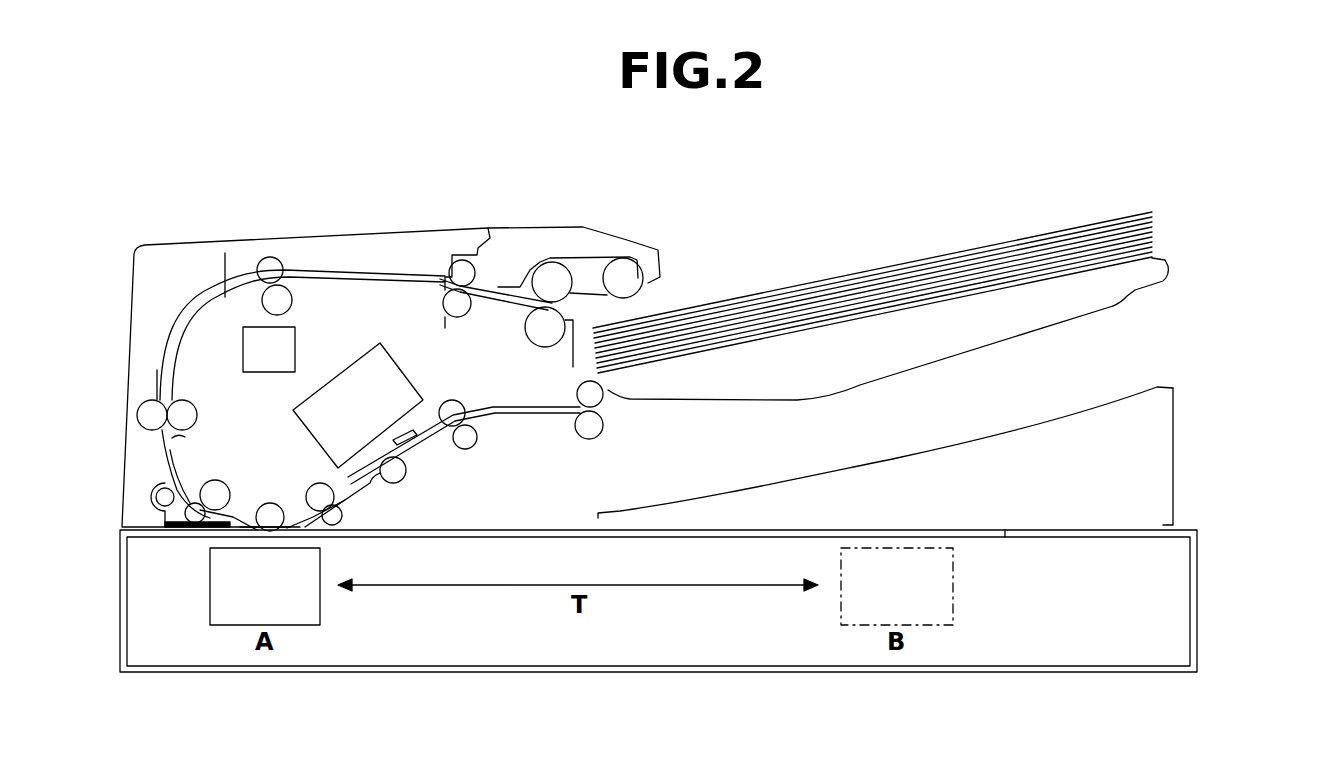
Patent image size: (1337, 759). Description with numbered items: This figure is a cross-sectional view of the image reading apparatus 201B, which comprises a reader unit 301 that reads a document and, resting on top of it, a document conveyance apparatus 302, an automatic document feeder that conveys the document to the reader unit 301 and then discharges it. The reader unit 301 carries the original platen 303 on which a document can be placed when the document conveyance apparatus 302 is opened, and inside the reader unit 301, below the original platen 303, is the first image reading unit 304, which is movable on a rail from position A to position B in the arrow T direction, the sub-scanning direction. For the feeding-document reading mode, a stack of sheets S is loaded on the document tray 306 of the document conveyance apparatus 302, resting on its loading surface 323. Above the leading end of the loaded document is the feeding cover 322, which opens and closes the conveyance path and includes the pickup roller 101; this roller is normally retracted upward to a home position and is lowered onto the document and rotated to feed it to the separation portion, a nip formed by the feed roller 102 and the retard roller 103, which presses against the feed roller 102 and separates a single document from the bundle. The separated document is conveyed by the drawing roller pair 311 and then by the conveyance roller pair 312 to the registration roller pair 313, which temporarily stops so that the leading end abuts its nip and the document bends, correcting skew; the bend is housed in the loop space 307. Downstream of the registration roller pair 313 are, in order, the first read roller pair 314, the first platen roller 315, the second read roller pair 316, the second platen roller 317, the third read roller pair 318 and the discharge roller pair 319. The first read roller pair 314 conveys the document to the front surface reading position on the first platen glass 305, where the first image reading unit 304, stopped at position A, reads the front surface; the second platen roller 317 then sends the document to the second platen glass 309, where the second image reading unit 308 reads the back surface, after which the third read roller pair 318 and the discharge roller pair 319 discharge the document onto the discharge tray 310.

The pickup roller 101 is at (623, 270).
The feed roller 102 is at (548, 268).
The retard roller 103 is at (545, 335).
The image reading apparatus 201B is at (1190, 447).
The reader unit 301 is at (1200, 602).
The document conveyance apparatus 302 is at (728, 220).
The original platen 303 is at (1005, 536).
The first image reading unit 304 is at (208, 603).
The first platen glass 305 is at (253, 532).
The document tray 306 is at (1120, 302).
The loop space 307 is at (162, 362).
The second image reading unit 308 is at (328, 385).
The second platen glass 309 is at (400, 456).
The discharge tray 310 is at (1050, 412).
The drawing roller pair 311 is at (462, 270).
The conveyance roller pair 312 is at (272, 262).
The registration roller pair 313 is at (138, 416).
The first read roller pair 314 is at (216, 482).
The first platen roller 315 is at (270, 505).
The second read roller pair 316 is at (343, 518).
The second platen roller 317 is at (401, 482).
The third read roller pair 318 is at (453, 410).
The discharge roller pair 319 is at (603, 424).
The feeding cover 322 is at (335, 252).
The loading surface 323 is at (863, 340).
The sheet S is at (868, 270).